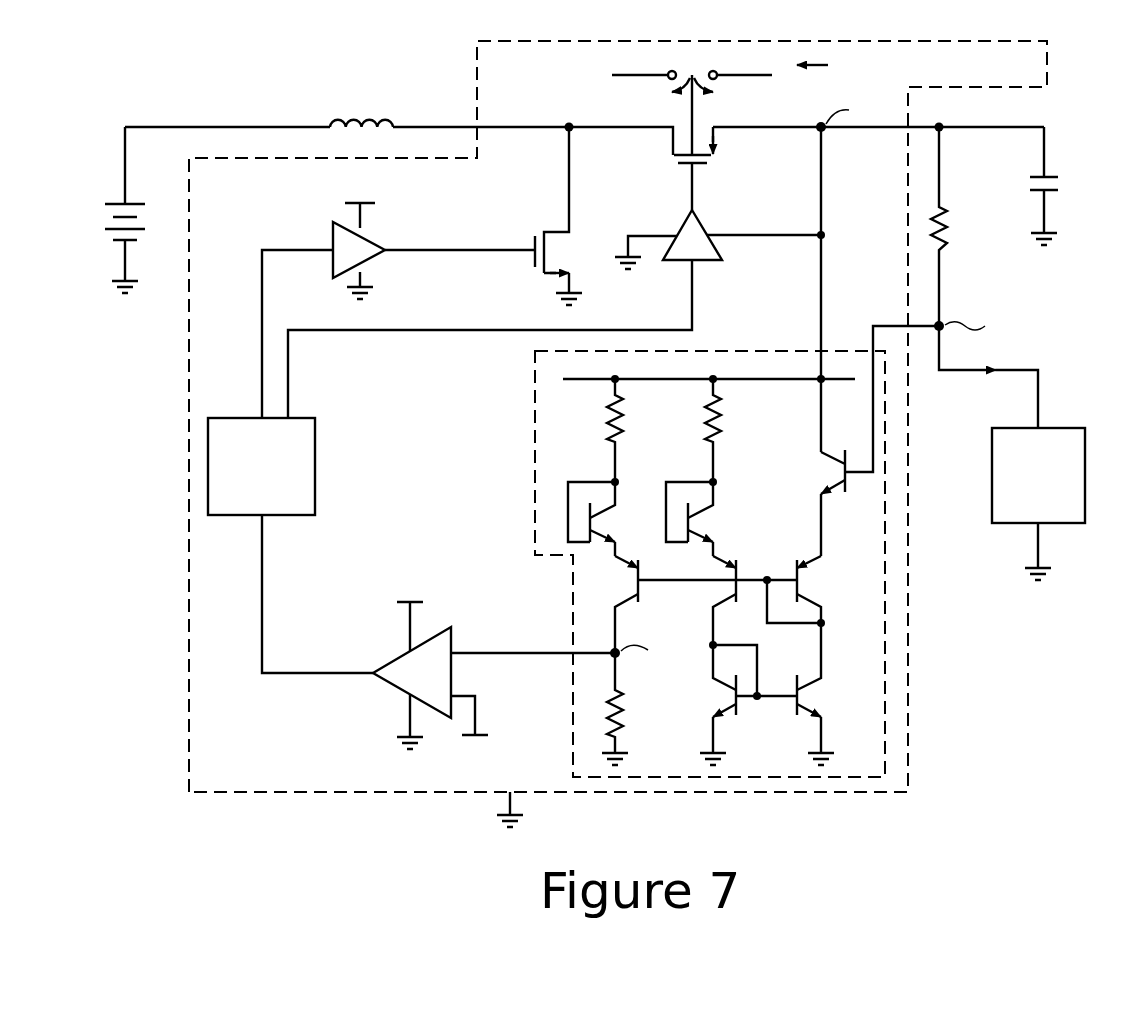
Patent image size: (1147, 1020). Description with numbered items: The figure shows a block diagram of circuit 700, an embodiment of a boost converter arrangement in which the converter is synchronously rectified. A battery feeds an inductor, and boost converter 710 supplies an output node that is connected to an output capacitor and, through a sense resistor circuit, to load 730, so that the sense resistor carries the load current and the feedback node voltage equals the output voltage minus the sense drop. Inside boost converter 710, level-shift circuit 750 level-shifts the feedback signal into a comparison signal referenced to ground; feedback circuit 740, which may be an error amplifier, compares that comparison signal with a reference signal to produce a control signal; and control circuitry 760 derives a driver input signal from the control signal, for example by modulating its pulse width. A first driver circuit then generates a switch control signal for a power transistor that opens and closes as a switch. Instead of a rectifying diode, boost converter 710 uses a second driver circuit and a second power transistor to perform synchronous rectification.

The circuit 700 is at (324, 57).
The boost converter 710 is at (908, 690).
The load 730 is at (1056, 504).
The feedback circuit 740 is at (393, 685).
The level-shift circuit 750 is at (885, 640).
The control circuitry 760 is at (315, 455).